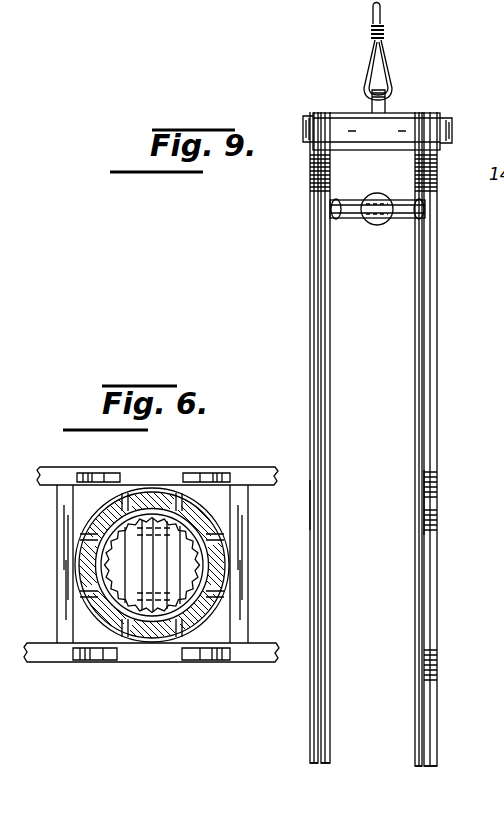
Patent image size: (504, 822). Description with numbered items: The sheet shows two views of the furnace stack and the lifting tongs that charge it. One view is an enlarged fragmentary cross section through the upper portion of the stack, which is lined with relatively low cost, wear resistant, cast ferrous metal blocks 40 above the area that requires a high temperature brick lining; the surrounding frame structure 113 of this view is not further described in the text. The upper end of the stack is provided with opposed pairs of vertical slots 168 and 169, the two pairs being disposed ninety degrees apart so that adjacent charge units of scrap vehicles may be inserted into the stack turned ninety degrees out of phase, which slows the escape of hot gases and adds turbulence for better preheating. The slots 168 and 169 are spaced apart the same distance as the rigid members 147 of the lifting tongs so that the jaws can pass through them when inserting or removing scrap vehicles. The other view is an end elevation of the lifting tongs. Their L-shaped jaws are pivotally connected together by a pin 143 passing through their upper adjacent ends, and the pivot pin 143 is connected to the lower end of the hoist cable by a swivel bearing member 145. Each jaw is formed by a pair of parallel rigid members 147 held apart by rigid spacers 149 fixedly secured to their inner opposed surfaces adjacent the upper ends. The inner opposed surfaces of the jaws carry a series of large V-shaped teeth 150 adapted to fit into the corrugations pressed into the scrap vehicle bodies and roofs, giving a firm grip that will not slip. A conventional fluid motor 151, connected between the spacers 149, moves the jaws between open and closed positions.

In FIG. 6, the cast ferrous metal blocks 40 is at (213, 513).
In FIG. 6, the frame beam 113 is at (63, 464).
In FIG. 9, the pivot pin 143 is at (455, 118).
In FIG. 9, the swivel bearing member 145 is at (403, 123).
In FIG. 9, the parallel rigid members 147 is at (418, 363).
In FIG. 9, the rigid spacers 149 is at (347, 216).
In FIG. 9, the V-shaped teeth 150 is at (435, 523).
In FIG. 9, the fluid motor 151 is at (390, 193).
In FIG. 6, the vertical slots 168 is at (207, 595).
In FIG. 6, the vertical slots 169 is at (122, 503).